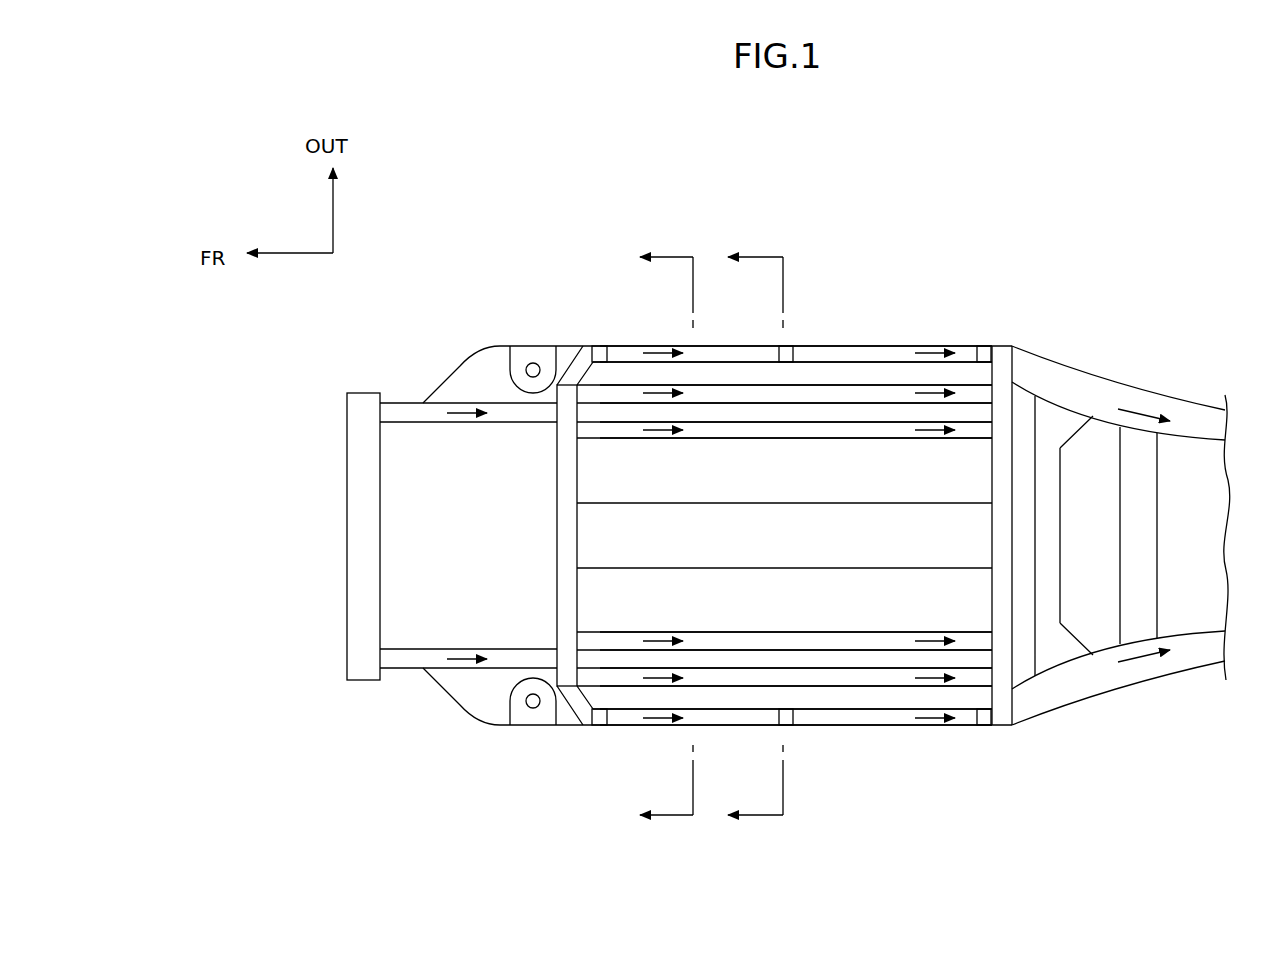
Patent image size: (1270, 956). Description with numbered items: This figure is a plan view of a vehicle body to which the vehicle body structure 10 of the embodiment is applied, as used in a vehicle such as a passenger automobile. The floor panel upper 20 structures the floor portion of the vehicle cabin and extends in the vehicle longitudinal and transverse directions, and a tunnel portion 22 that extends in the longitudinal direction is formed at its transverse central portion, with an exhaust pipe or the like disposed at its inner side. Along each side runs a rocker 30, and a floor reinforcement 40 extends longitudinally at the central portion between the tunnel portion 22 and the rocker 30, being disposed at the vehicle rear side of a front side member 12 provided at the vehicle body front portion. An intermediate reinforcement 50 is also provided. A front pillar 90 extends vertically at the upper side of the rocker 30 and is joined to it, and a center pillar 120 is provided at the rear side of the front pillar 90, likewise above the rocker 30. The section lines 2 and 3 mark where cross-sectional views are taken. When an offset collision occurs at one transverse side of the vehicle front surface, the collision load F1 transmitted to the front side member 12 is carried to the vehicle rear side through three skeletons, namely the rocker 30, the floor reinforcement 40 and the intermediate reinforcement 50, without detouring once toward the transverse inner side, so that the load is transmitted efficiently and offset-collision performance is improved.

The vehicle body structure 10 is at (667, 212).
The front side member 12 is at (468, 400).
The floor panel upper 20 is at (708, 465).
The tunnel portion 22 is at (733, 503).
The rocker 30 is at (842, 350).
The floor reinforcement 40 is at (848, 427).
The intermediate reinforcement 50 is at (750, 392).
The front pillar 90 is at (600, 346).
The center pillar 120 is at (787, 348).
The section line 2 is at (655, 536).
The section line 3 is at (745, 536).
The collision load F1 is at (465, 414).